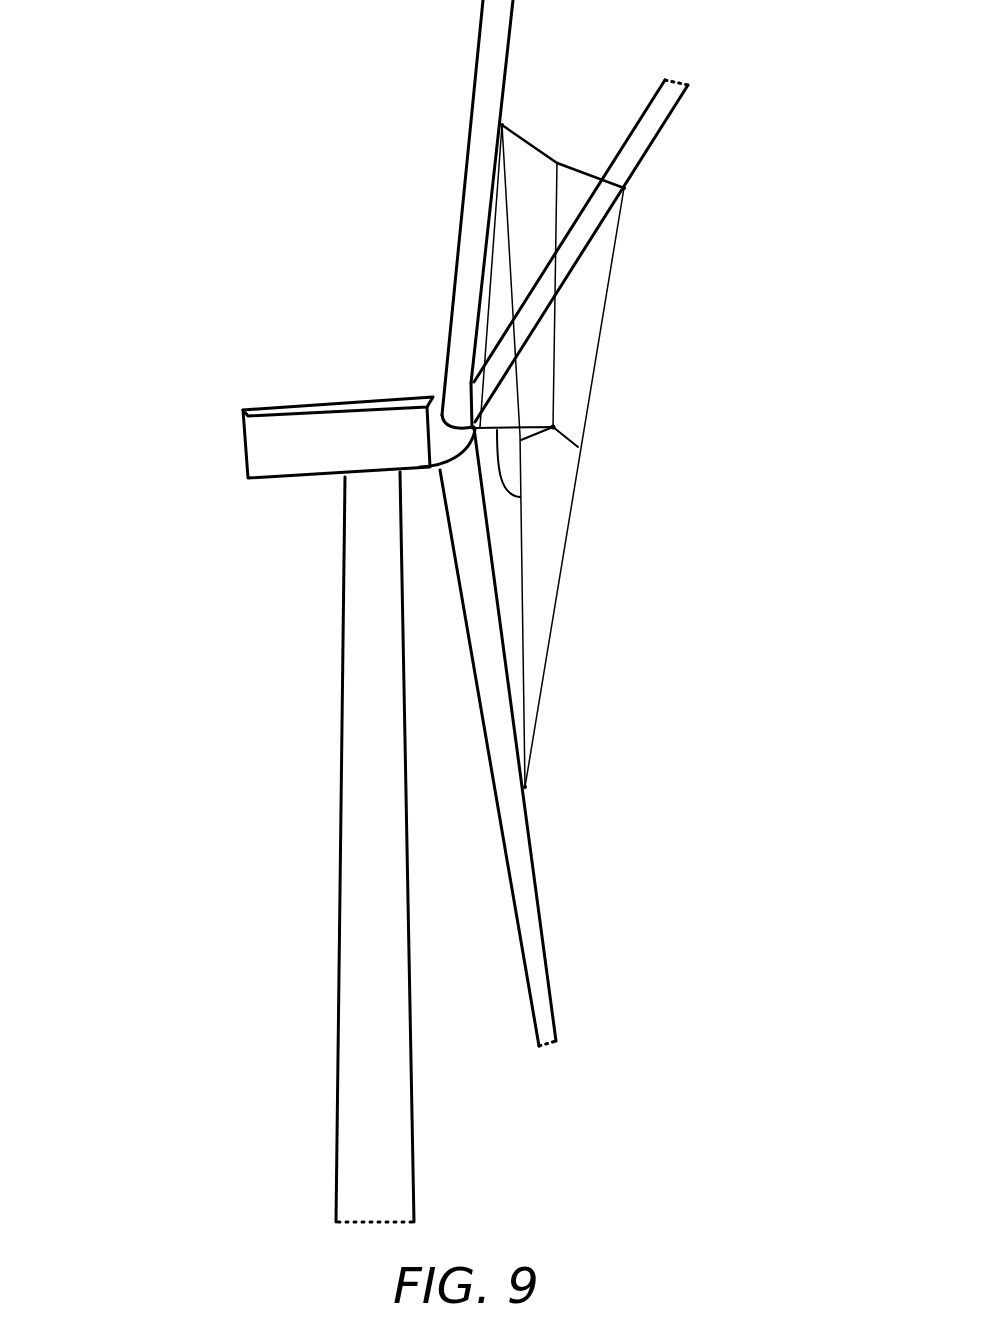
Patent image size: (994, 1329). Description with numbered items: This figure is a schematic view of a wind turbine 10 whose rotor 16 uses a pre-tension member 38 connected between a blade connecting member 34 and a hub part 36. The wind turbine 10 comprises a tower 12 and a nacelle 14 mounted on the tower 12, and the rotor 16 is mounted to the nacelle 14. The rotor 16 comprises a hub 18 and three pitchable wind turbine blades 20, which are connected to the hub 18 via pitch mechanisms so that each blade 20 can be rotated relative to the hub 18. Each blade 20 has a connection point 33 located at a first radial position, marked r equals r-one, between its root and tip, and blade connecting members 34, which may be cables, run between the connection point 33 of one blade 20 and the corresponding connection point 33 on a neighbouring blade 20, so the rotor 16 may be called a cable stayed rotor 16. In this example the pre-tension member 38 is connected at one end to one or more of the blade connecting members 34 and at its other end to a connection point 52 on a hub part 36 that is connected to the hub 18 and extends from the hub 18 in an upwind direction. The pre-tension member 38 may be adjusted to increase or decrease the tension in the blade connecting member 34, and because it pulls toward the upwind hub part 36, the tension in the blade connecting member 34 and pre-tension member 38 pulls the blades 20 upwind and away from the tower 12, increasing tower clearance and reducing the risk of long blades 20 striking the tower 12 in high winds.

The wind turbine 10 is at (145, 170).
The tower 12 is at (360, 652).
The nacelle 14 is at (287, 433).
The rotor 16 is at (668, 479).
The hub 18 is at (440, 445).
The wind turbine blade 20 is at (476, 38).
The connection point 33 is at (405, 132).
The blade connecting member 34 is at (540, 147).
The hub part 36 is at (520, 497).
The pre-tension member 38 is at (557, 363).
The connection point 52 is at (553, 427).